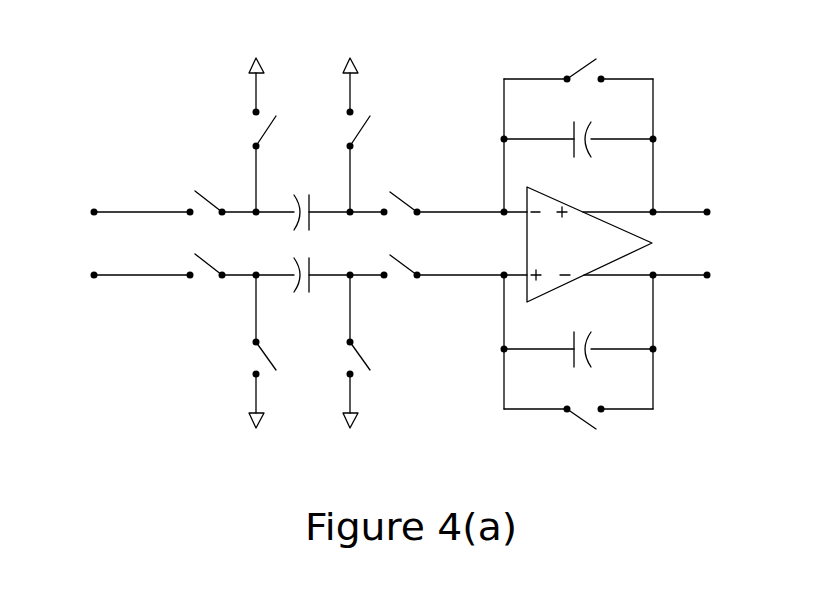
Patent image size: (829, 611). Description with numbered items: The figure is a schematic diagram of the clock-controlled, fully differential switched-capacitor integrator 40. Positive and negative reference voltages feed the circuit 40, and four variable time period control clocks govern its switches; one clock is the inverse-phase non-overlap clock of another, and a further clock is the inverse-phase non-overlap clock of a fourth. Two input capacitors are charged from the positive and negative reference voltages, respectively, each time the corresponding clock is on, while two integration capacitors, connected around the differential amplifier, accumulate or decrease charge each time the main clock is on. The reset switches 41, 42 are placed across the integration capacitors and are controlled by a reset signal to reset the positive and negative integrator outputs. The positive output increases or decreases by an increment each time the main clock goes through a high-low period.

The fully differential switched-capacitor integrator 40 is at (156, 103).
The RESET switch 41 is at (578, 72).
The RESET switch 42 is at (578, 418).